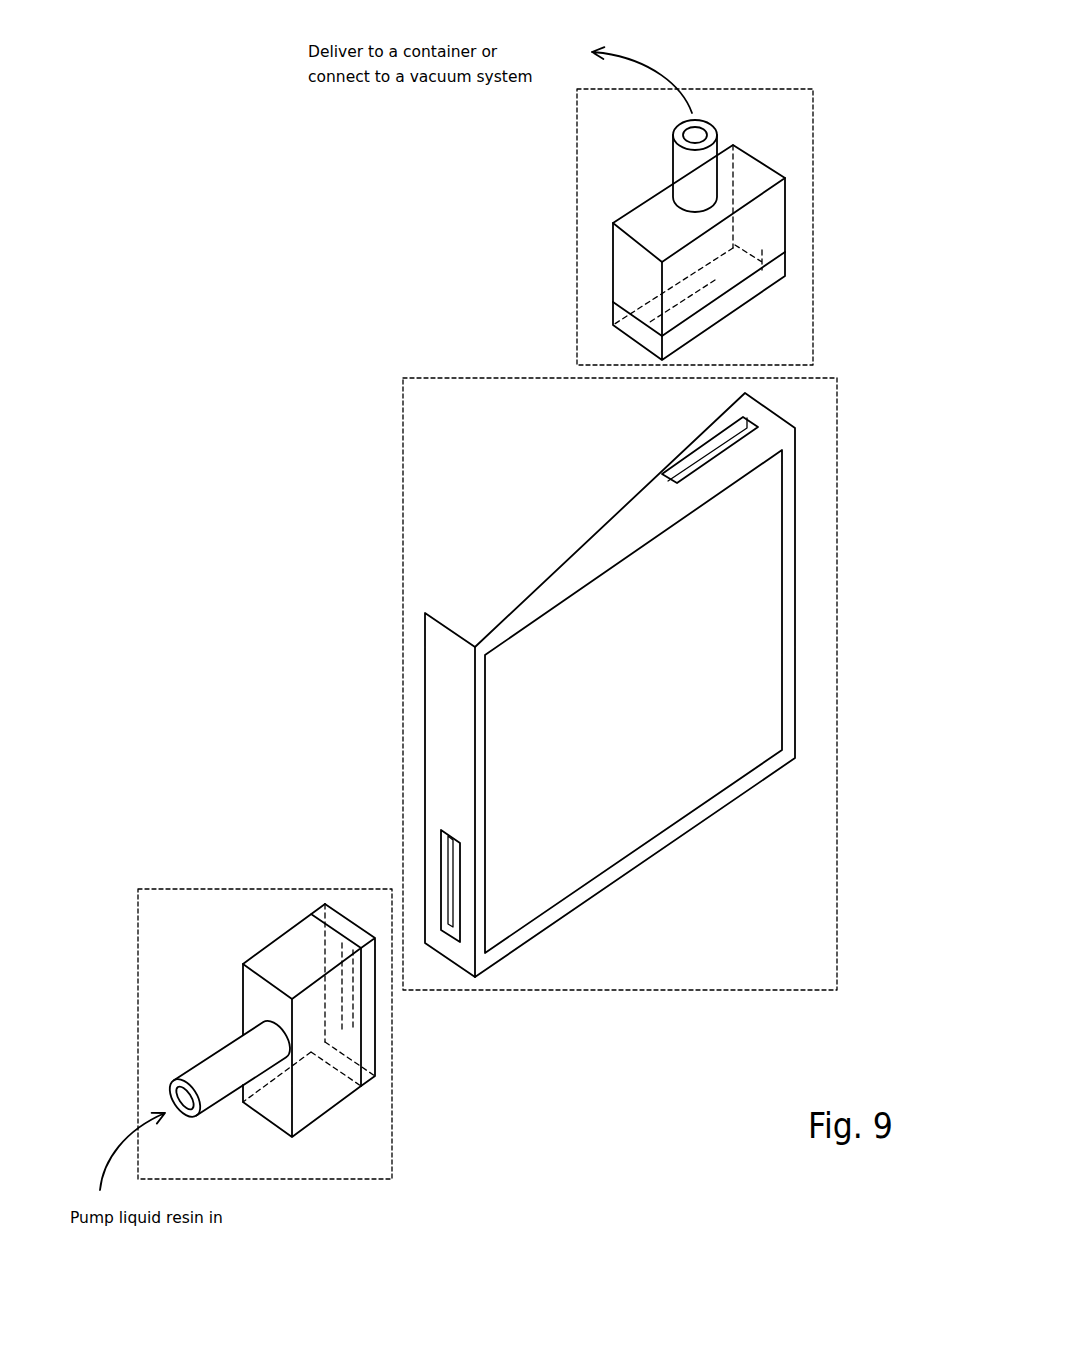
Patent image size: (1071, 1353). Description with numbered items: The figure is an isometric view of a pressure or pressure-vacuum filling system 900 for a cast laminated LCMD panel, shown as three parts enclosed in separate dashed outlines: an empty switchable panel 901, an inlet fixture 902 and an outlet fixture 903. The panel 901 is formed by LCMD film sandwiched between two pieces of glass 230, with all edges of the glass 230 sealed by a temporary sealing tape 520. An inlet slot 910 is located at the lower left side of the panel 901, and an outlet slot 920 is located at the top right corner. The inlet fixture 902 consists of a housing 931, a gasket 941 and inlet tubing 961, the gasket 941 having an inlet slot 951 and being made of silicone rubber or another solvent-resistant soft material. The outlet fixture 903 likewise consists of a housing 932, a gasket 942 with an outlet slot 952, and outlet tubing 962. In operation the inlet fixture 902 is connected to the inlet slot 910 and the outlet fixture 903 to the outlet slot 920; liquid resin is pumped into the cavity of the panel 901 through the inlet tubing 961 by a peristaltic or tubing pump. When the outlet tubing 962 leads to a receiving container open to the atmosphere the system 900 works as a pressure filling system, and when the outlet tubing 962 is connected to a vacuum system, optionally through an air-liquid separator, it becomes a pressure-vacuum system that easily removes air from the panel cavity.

The pressure or pressure-vacuum filling system 900 is at (169, 197).
The empty switchable panel 901 is at (403, 485).
The inlet fixture 902 is at (137, 920).
The outlet fixture 903 is at (813, 212).
The glass 230 is at (593, 815).
The temporary sealing tape 520 is at (438, 783).
The inlet slot 910 is at (440, 863).
The outlet slot 920 is at (702, 450).
The housing 931 is at (283, 947).
The housing 932 is at (622, 248).
The gasket 941 is at (368, 1053).
The gasket 942 is at (616, 318).
The inlet slot 951 is at (347, 997).
The outlet slot 952 is at (730, 292).
The inlet tubing 961 is at (220, 1062).
The outlet tubing 962 is at (697, 175).